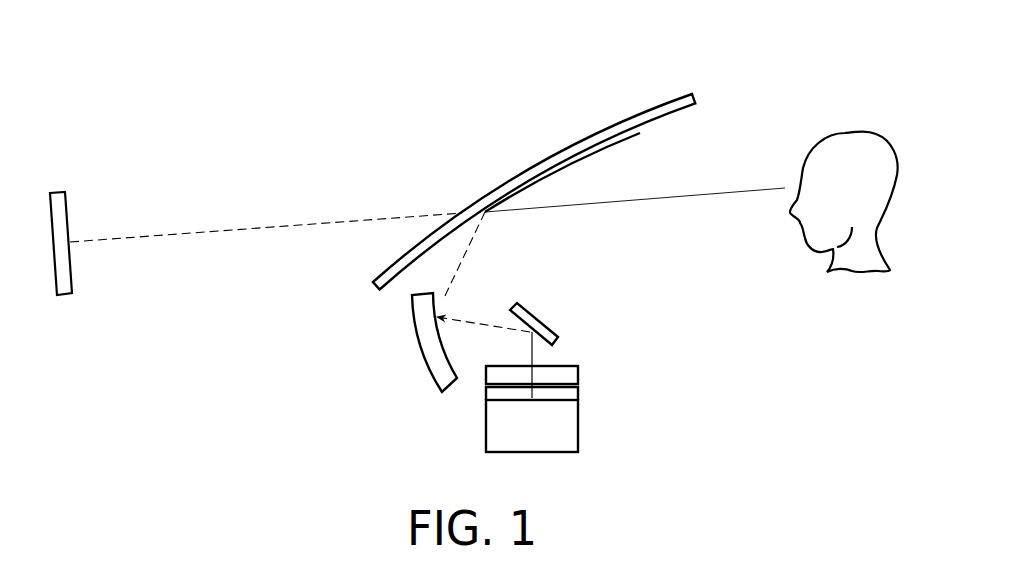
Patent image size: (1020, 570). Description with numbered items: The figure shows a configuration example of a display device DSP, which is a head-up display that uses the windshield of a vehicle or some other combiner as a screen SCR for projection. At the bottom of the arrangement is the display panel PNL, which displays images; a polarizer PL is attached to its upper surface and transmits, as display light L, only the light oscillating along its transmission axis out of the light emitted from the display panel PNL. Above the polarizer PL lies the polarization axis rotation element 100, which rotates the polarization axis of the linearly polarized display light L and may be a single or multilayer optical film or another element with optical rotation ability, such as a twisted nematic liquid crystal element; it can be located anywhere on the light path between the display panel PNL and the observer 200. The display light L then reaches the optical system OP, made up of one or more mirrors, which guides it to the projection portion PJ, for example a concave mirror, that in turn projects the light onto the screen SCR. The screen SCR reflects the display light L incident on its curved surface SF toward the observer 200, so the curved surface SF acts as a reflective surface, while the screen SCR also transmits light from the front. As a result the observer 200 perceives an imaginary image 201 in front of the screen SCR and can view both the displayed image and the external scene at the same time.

The display device DSP is at (764, 60).
The screen SCR is at (578, 140).
The curved surface SF is at (627, 138).
The observer 200 is at (845, 133).
The imaginary image 201 is at (65, 192).
The projection portion PJ is at (420, 347).
The optical system OP is at (548, 316).
The display light L is at (533, 360).
The polarization axis rotation element 100 is at (572, 375).
The polarizer PL is at (572, 393).
The display panel PNL is at (572, 427).